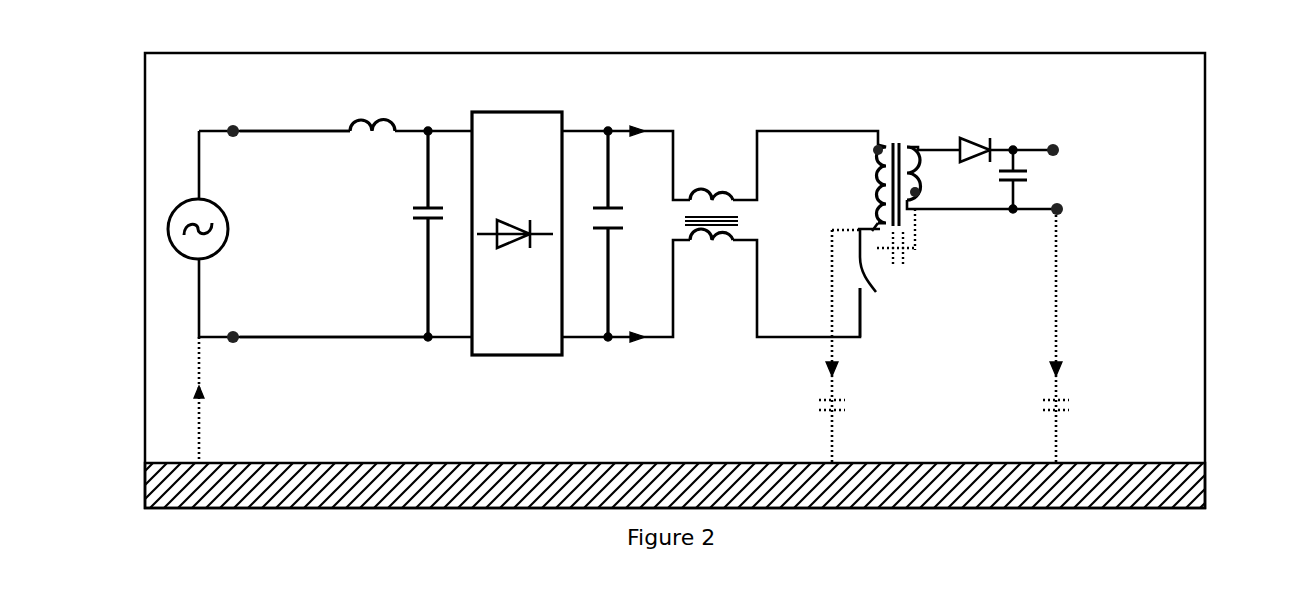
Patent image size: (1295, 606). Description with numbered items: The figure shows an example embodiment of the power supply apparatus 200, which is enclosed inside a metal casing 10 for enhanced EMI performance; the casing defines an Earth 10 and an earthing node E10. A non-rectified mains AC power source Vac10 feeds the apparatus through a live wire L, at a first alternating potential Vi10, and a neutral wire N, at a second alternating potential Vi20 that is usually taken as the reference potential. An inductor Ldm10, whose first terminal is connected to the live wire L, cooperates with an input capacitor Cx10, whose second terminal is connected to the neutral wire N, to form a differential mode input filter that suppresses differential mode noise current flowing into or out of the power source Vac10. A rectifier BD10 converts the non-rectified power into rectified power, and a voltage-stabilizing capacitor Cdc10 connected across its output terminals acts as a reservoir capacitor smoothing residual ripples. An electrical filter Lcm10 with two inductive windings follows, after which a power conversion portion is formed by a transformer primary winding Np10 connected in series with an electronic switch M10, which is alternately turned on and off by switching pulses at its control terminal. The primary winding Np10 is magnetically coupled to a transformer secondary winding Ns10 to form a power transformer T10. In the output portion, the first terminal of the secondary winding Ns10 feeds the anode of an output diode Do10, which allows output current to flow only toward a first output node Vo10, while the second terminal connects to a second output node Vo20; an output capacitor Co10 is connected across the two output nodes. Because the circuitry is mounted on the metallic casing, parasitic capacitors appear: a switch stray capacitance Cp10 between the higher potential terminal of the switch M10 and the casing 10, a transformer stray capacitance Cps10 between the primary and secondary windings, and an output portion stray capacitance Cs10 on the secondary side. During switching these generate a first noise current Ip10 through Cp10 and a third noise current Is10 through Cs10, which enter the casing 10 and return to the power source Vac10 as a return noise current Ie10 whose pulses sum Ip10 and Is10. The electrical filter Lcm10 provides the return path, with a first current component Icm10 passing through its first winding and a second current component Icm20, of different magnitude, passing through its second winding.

The power supply apparatus 200 is at (196, 43).
The metal casing 10 is at (1165, 53).
The live wire L is at (290, 124).
The neutral wire N is at (316, 346).
The inductor Ldm10 is at (371, 113).
The first alternating potential Vi10 is at (246, 138).
The second alternating potential Vi20 is at (246, 344).
The power source Vac10 is at (236, 222).
The input capacitor Cx10 is at (396, 216).
The rectifier BD10 is at (553, 108).
The voltage-stabilizing capacitor Cdc10 is at (624, 239).
The first current component Icm10 is at (645, 122).
The second current component Icm20 is at (639, 348).
The electrical filter Lcm10 is at (710, 173).
The power transformer T10 is at (898, 138).
The transformer primary winding Np10 is at (868, 150).
The transformer secondary winding Ns10 is at (921, 166).
The electronic switch M10 is at (873, 263).
The transformer stray capacitance Cps10 is at (915, 258).
The first noise current Ip10 is at (815, 367).
The switch stray capacitance Cp10 is at (855, 405).
The third noise current Is10 is at (1040, 370).
The output portion stray capacitance Cs10 is at (1082, 405).
The output diode Do10 is at (972, 138).
The output capacitor Co10 is at (1042, 173).
The first output node Vo10 is at (1058, 138).
The second output node Vo20 is at (1068, 228).
The return noise current Ie10 is at (185, 393).
The earthing node E10 is at (208, 453).
The Earth Earth10 is at (405, 462).